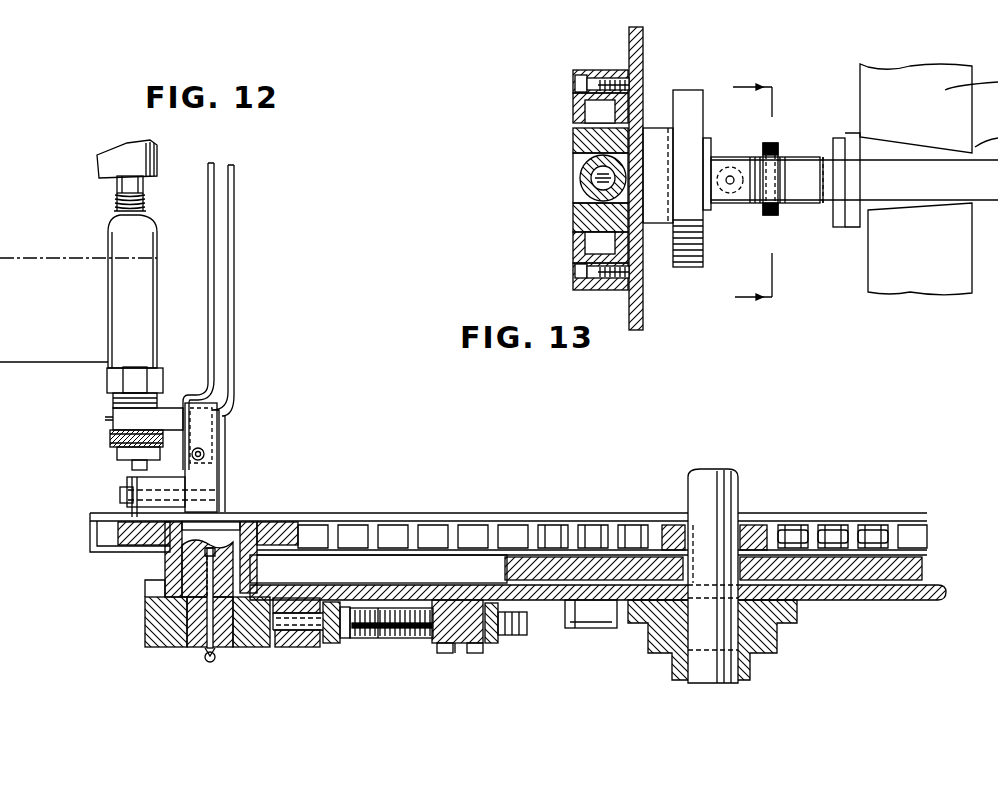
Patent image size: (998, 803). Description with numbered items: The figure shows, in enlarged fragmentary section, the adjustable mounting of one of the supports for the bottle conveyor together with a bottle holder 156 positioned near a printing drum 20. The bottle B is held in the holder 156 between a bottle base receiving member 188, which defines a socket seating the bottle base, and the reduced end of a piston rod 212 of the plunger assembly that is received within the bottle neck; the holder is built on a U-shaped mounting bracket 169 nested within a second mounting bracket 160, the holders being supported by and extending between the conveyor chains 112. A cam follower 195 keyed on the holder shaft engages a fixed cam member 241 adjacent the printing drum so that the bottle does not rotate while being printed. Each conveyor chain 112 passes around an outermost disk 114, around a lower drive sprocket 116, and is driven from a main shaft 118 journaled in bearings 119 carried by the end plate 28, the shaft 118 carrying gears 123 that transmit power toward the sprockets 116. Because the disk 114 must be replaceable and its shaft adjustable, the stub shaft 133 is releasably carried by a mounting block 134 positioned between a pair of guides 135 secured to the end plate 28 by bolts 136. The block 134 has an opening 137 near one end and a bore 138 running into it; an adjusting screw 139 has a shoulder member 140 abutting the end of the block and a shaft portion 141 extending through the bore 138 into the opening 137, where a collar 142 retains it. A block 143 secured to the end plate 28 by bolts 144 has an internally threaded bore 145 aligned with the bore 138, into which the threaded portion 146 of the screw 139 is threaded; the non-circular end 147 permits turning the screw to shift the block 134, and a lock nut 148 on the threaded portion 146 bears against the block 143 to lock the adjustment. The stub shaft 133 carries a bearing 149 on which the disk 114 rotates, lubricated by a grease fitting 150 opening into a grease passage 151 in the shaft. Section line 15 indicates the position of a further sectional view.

In FIG. 12, the printing drum 20 is at (14, 272).
In FIG. 12, the piston rod 212 is at (155, 178).
In FIG. 12, the bottle B is at (140, 240).
In FIG. 12, the bottle base receiving member 188 is at (167, 373).
In FIG. 12, the mounting bracket 169 is at (207, 258).
In FIG. 12, the mounting bracket 160 is at (230, 303).
In FIG. 13, the mounting bracket 160 is at (927, 192).
In FIG. 12, the bottle holder 156 is at (218, 460).
In FIG. 13, the bottle holder 156 is at (828, 214).
In FIG. 12, the conveyor chain 112 is at (100, 534).
In FIG. 12, the bearing 149 is at (258, 523).
In FIG. 12, the disk 114 is at (295, 525).
In FIG. 13, the disk 114 is at (690, 268).
In FIG. 12, the lower drive sprocket 116 is at (828, 525).
In FIG. 12, the gear 123 is at (882, 600).
In FIG. 12, the end plate 28 is at (556, 600).
In FIG. 13, the end plate 28 is at (629, 40).
In FIG. 12, the bearing 119 is at (778, 626).
In FIG. 12, the main shaft 118 is at (725, 492).
In FIG. 12, the mounting block 134 is at (267, 648).
In FIG. 13, the mounting block 134 is at (573, 142).
In FIG. 12, the stub shaft 133 is at (233, 652).
In FIG. 12, the grease fitting 150 is at (204, 659).
In FIG. 12, the grease passage 151 is at (207, 577).
In FIG. 12, the collar 142 is at (293, 597).
In FIG. 13, the collar 142 is at (583, 190).
In FIG. 12, the opening 137 is at (300, 648).
In FIG. 13, the opening 137 is at (577, 210).
In FIG. 12, the shaft portion 141 is at (275, 623).
In FIG. 13, the shaft portion 141 is at (618, 175).
In FIG. 12, the bore 138 is at (320, 642).
In FIG. 12, the shoulder member 140 is at (347, 637).
In FIG. 12, the adjusting screw 139 is at (418, 638).
In FIG. 12, the threaded portion 146 is at (380, 607).
In FIG. 12, the internally threaded bore 145 is at (430, 607).
In FIG. 12, the bolt 144 is at (447, 654).
In FIG. 12, the block 143 is at (457, 654).
In FIG. 12, the lock nut 148 is at (493, 643).
In FIG. 12, the non-circular end 147 is at (523, 636).
In FIG. 13, the bolt 136 is at (642, 80).
In FIG. 13, the guide 135 is at (573, 102).
In FIG. 13, the section line 15 is at (746, 193).
In FIG. 13, the cam follower 195 is at (785, 157).
In FIG. 13, the cam member 241 is at (773, 143).